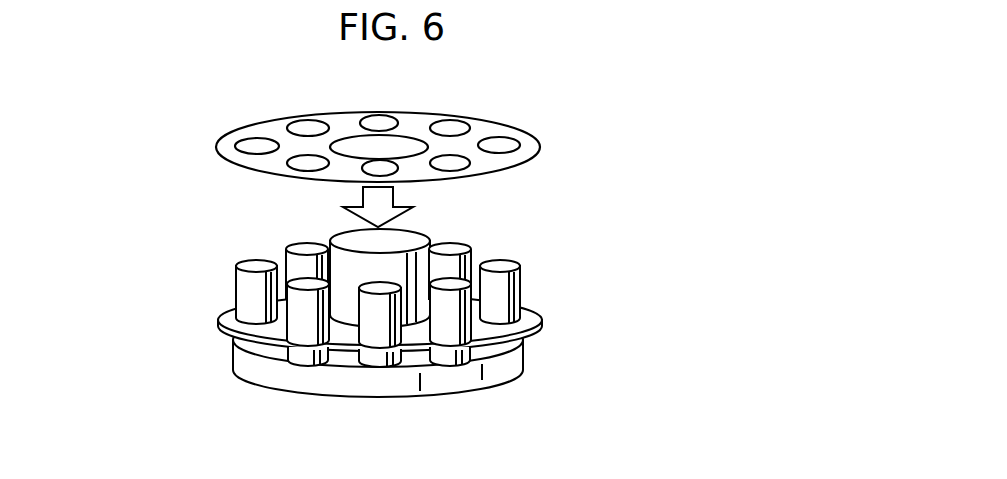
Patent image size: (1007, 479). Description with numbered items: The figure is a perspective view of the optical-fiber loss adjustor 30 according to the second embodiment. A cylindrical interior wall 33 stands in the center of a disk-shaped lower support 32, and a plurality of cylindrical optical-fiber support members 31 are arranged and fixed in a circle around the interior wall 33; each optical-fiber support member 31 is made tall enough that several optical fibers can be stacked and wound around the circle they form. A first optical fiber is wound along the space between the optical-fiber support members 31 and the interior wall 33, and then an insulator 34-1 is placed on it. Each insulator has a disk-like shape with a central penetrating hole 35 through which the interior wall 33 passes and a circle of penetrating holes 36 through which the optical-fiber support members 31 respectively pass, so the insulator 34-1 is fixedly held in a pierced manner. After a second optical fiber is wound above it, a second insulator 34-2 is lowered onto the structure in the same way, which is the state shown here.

The optical-fiber loss adjustor 30 is at (539, 70).
The optical-fiber support member 31 is at (243, 288).
The lower support 32 is at (447, 380).
The interior wall 33 is at (420, 240).
The insulator 34-1 is at (522, 308).
The insulator 34-2 is at (534, 138).
The penetrating hole 35 is at (403, 143).
The penetrating holes 36 is at (306, 125).